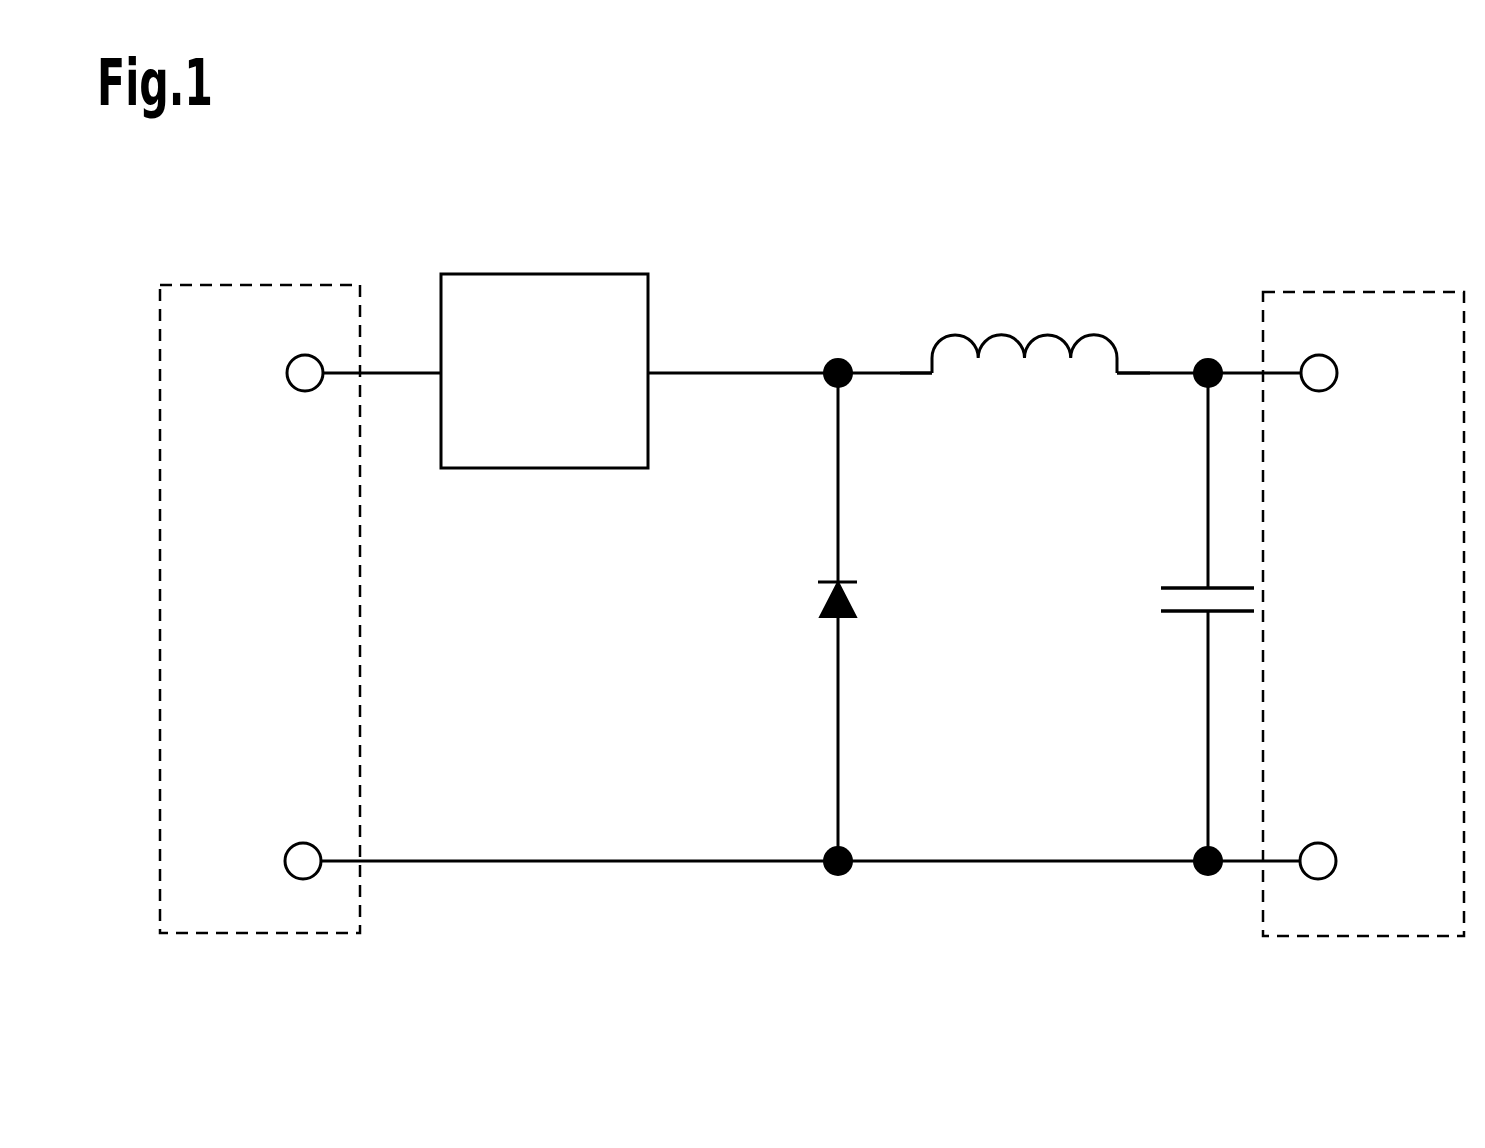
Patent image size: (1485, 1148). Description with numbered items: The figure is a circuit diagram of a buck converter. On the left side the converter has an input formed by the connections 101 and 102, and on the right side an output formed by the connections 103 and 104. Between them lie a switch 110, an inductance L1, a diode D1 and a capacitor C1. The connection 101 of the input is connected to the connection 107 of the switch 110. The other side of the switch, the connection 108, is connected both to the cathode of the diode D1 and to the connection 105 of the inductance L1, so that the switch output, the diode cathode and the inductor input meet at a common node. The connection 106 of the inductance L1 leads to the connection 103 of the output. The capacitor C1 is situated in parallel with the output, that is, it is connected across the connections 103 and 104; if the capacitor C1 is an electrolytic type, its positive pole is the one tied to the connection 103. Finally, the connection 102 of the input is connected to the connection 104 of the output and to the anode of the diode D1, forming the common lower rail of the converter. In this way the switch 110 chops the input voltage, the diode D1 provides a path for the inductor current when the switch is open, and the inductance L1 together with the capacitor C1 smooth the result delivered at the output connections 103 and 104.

The connection of the input 101 is at (277, 355).
The connection of the input 102 is at (275, 875).
The connection of the output 103 is at (1351, 358).
The connection of the output 104 is at (1350, 876).
The connection of the inductance 105 is at (932, 394).
The connection of the inductance 106 is at (1116, 394).
The connection of the switch 107 is at (382, 354).
The connection of the switch 108 is at (743, 354).
The switch 110 is at (544, 371).
The inductance L1 is at (1024, 332).
The diode D1 is at (808, 590).
The capacitor C1 is at (1182, 587).